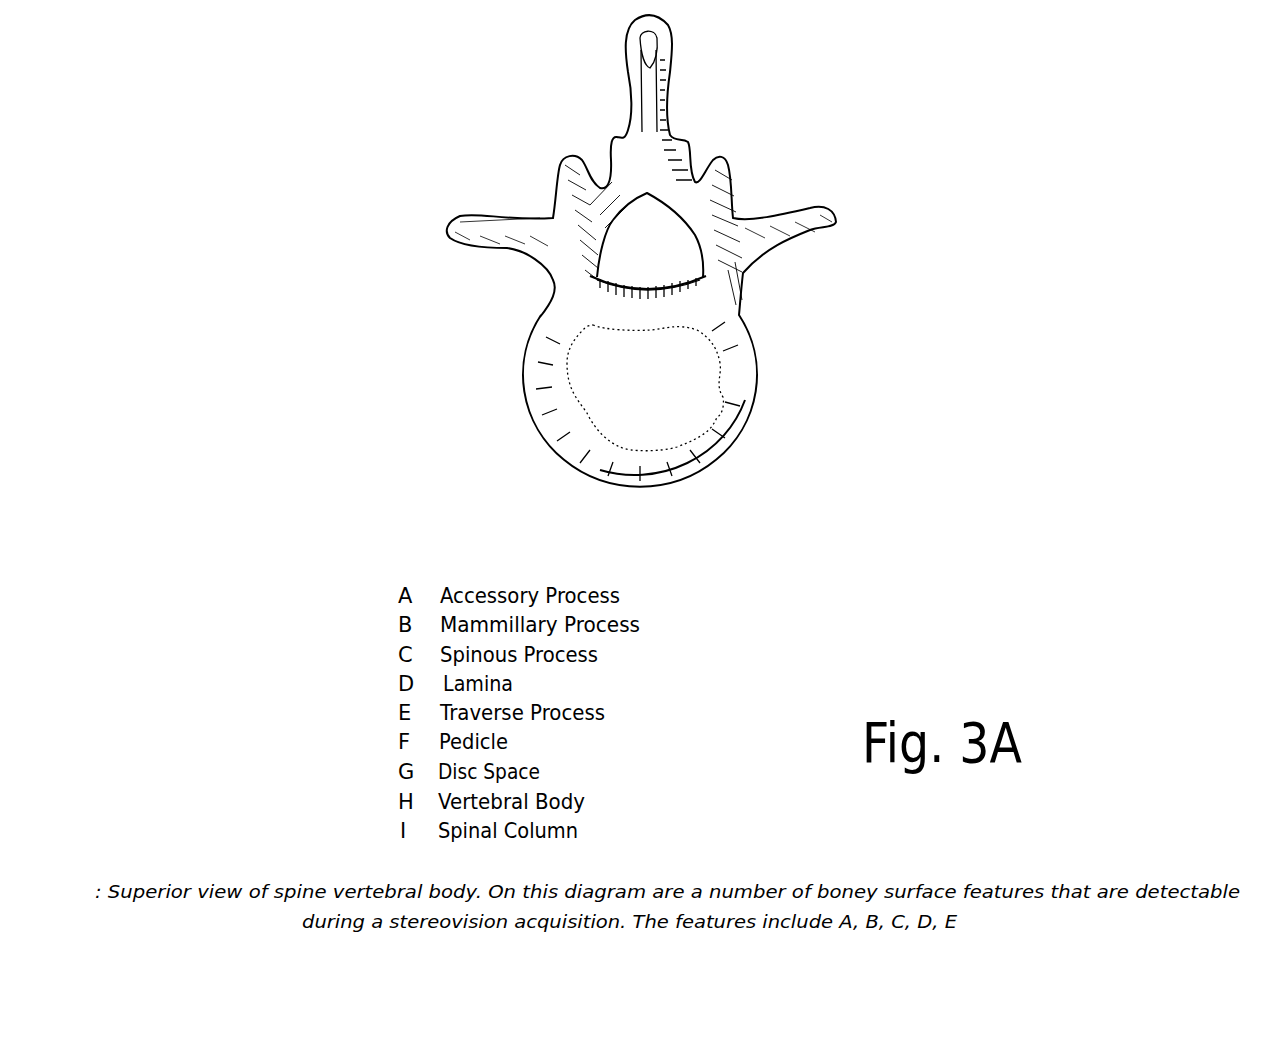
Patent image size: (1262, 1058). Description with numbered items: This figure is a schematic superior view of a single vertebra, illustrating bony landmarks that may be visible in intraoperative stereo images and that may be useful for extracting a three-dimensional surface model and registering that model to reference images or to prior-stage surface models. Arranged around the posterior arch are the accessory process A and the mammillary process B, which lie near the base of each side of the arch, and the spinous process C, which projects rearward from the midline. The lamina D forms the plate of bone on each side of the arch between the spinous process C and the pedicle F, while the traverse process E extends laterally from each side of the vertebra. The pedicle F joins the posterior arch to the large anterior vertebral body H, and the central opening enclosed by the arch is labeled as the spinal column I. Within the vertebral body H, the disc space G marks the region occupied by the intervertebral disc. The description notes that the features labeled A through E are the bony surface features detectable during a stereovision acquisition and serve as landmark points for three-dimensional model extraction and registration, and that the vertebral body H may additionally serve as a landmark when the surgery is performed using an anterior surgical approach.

The accessory process A is at (525, 220).
The mammillary process B is at (565, 155).
The spinous process C is at (672, 43).
The lamina D is at (733, 180).
The traverse process E is at (773, 238).
The pedicle F is at (712, 277).
The disc space G is at (645, 388).
The vertebral body H is at (641, 251).
The spinal column I is at (670, 222).